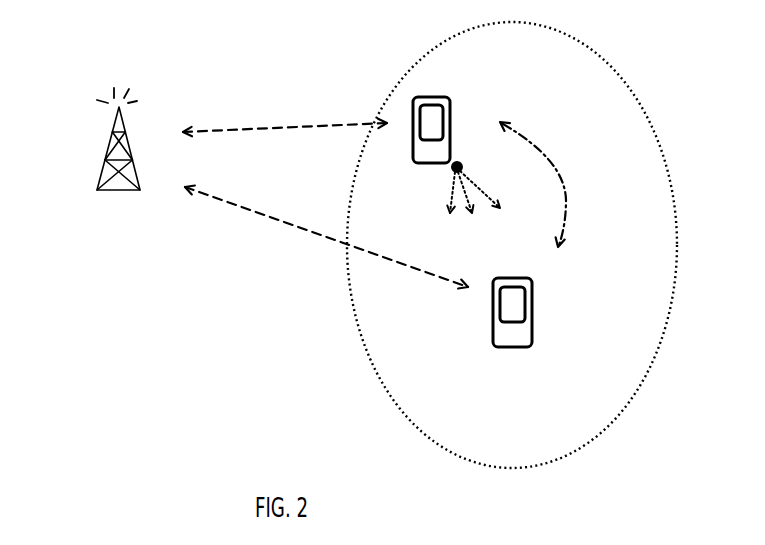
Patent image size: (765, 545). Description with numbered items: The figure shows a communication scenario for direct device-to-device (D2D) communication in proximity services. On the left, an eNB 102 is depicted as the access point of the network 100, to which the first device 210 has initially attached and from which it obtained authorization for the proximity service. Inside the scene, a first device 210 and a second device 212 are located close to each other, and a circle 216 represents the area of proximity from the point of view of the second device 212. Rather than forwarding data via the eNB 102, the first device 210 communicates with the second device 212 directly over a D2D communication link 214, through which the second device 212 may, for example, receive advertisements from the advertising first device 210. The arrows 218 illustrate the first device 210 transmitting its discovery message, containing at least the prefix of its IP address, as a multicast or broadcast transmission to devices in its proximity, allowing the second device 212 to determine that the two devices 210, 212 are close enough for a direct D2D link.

The network 100 is at (103, 165).
The eNB 102 is at (101, 163).
The first device 210 is at (450, 98).
The second device 212 is at (532, 283).
The D2D communication link 214 is at (552, 163).
The circle 216 is at (640, 387).
The arrows 218 is at (448, 190).